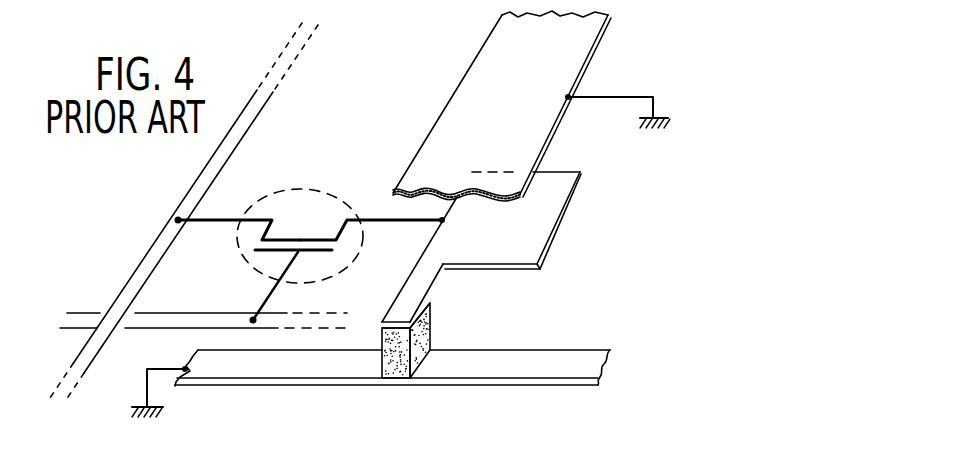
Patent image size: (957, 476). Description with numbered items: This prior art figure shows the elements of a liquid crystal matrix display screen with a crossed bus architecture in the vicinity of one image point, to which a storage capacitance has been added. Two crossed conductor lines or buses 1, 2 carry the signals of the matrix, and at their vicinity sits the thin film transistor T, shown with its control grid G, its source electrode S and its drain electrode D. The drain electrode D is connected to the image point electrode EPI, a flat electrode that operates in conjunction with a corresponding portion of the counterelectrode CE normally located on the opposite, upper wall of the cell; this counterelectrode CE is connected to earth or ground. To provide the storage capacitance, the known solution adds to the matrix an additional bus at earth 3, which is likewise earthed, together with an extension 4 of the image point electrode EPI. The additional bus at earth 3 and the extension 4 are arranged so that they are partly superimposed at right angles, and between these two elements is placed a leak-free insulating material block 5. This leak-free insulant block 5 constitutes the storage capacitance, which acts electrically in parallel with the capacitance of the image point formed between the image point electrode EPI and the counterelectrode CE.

The scanning line 1 is at (146, 257).
The signal line 2 is at (193, 316).
The additional bus at earth 3 is at (542, 367).
The extension of the image point electrode 4 is at (410, 300).
The leak-free insulating material block 5 is at (400, 357).
The source electrode S is at (200, 217).
The drain electrode D is at (368, 218).
The control grid G is at (272, 293).
The thin film transistor T is at (316, 182).
The counterelectrode CE is at (503, 43).
The image point electrode EPI is at (543, 232).